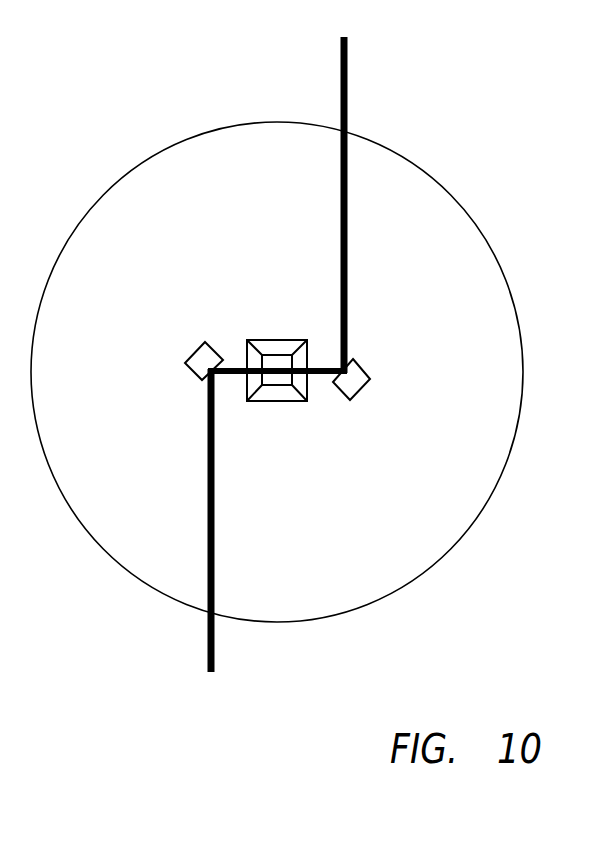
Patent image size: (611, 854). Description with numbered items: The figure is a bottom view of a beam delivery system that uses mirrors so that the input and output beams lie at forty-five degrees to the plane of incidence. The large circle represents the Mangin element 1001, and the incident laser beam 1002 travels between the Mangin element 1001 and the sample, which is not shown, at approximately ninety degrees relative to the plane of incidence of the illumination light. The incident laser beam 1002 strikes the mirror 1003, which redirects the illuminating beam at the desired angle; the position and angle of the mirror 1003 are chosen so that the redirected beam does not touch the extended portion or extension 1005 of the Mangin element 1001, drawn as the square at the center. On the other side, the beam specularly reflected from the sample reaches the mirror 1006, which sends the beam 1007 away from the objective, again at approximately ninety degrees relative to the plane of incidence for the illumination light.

The Mangin element 1001 is at (167, 148).
The incident laser beam 1002 is at (202, 631).
The mirror 1003 is at (195, 367).
The extension of Mangin element 1005 is at (270, 347).
The mirror 1006 is at (363, 380).
The beam 1007 is at (358, 114).